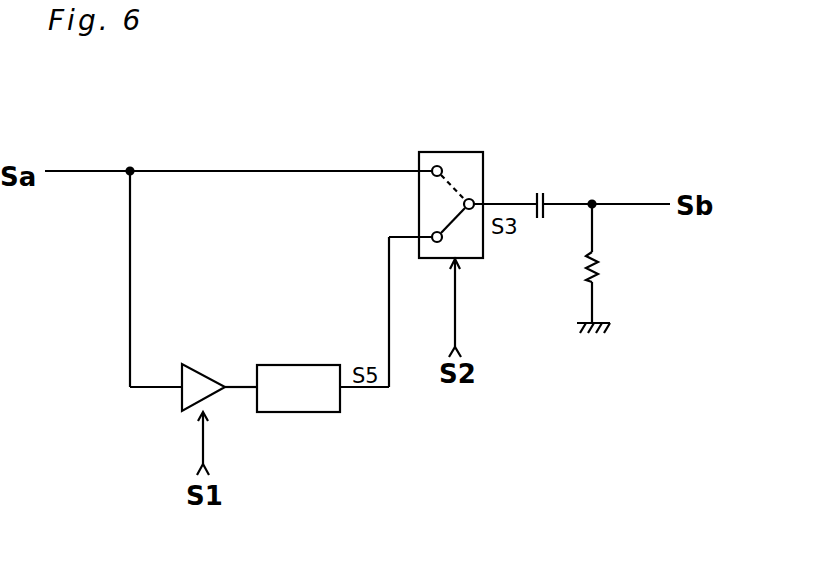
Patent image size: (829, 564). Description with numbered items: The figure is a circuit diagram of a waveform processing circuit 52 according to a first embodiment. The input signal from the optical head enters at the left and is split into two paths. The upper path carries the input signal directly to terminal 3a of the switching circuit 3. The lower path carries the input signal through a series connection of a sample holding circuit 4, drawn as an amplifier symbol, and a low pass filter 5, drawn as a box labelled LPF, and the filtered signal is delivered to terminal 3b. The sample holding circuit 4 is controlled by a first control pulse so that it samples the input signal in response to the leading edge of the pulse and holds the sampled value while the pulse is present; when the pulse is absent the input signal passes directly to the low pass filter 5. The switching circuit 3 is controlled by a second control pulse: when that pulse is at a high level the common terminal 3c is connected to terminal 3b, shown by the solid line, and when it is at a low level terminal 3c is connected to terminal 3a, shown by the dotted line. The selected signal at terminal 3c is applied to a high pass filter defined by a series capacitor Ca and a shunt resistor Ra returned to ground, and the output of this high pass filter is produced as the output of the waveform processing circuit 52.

The waveform processing circuit 52 is at (289, 142).
The switching circuit 3 is at (478, 205).
The terminal 3a is at (435, 165).
The terminal 3b is at (436, 243).
The terminal 3c is at (472, 200).
The sample holding circuit 4 is at (200, 364).
The low pass filter 5 is at (290, 365).
The capacitor Ca is at (546, 190).
The resistor Ra is at (609, 268).